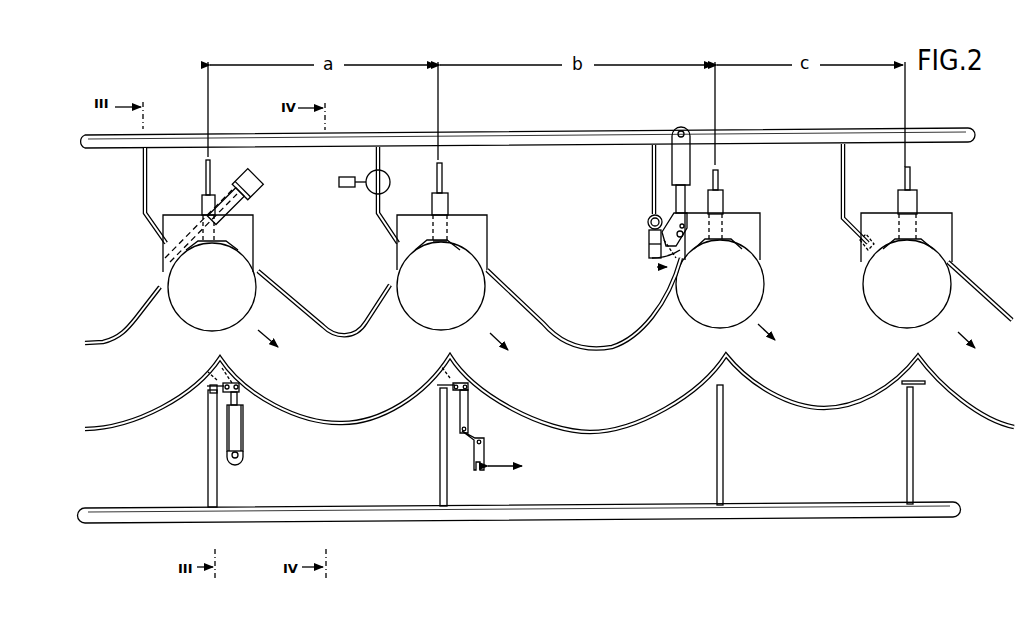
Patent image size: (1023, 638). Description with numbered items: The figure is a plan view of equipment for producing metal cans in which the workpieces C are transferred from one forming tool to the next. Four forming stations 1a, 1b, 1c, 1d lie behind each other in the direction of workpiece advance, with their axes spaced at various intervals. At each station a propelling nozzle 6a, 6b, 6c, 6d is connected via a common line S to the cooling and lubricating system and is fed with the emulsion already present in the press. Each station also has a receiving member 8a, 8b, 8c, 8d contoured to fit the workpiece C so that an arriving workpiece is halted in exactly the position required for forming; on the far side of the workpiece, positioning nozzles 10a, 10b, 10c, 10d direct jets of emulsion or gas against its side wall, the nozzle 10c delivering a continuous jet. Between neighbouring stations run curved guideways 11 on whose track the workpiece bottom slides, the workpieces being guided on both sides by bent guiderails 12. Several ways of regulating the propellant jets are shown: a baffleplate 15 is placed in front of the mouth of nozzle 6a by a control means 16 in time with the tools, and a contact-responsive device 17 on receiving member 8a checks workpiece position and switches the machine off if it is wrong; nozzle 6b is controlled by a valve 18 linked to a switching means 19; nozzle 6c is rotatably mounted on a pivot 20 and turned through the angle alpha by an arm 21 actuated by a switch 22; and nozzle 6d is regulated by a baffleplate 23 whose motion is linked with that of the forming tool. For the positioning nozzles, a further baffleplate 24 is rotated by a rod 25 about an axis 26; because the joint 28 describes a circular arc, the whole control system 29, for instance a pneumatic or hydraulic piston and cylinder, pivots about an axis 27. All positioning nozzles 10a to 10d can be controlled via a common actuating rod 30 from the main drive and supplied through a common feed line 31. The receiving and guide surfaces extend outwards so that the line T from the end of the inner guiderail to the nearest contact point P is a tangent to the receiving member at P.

The common line S is at (577, 132).
The common feed line 31 is at (838, 519).
The forming station 1a is at (203, 280).
The forming station 1b is at (441, 286).
The forming station 1c is at (720, 284).
The forming station 1d is at (907, 284).
The propelling nozzle 6a is at (142, 221).
The propelling nozzle 6b is at (373, 226).
The propelling nozzle 6c is at (650, 240).
The propelling nozzle 6d is at (842, 216).
The receiving member 8a is at (250, 256).
The receiving member 8b is at (481, 232).
The receiving member 8c is at (752, 233).
The receiving member 8d is at (950, 239).
The positioning nozzle 10a is at (208, 414).
The positioning nozzle 10b is at (440, 412).
The positioning nozzle 10c is at (724, 431).
The positioning nozzle 10d is at (914, 432).
The curved guideway 11 is at (587, 381).
The bent guiderail 12 is at (336, 334).
The baffleplate 15 is at (165, 262).
The control means 16 is at (258, 198).
The checking device 17 is at (216, 239).
The valve 18 is at (390, 181).
The switching means 19 is at (347, 188).
The pivot 20 is at (647, 222).
The arm 21 is at (687, 235).
The switch 22 is at (694, 160).
The baffleplate 23 is at (862, 246).
The baffleplate 24 is at (212, 376).
The rod 25 is at (240, 397).
The axis 26 is at (232, 384).
The axis 27 is at (235, 461).
The joint 28 is at (240, 384).
The control system 29 is at (244, 432).
The common actuating rod 30 is at (504, 468).
The point of contact P is at (244, 250).
The workpiece C is at (249, 280).
The tangent line T is at (262, 283).
The angle alpha is at (668, 268).